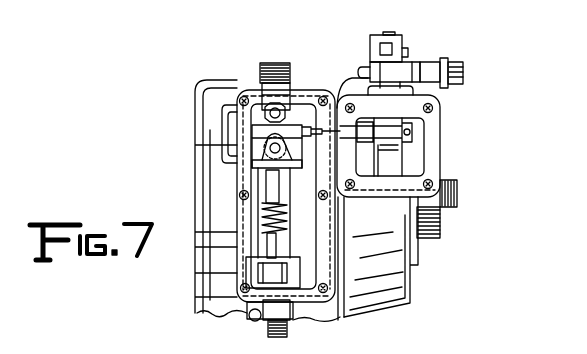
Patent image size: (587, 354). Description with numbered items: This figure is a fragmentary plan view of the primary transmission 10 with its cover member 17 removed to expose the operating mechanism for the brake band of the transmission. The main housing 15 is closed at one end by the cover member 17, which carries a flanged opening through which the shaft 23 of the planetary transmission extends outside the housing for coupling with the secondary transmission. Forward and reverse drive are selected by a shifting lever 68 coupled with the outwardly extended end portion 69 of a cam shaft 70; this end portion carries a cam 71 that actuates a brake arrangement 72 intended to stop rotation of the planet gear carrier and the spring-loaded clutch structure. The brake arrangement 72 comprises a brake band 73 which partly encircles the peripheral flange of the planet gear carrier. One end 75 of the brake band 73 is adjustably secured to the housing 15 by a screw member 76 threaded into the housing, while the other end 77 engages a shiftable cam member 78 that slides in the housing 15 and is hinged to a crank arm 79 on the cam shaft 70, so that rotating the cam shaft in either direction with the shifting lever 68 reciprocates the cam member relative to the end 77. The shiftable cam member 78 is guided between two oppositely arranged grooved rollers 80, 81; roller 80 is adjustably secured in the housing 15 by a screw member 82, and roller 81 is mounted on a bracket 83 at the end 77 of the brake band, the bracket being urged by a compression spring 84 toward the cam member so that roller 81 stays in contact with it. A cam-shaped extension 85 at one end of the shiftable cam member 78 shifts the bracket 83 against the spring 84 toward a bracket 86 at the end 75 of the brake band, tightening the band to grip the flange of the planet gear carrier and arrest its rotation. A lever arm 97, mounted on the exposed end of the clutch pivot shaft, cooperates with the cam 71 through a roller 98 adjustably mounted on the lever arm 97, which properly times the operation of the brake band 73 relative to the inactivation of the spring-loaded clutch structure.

The fuel injection pump housing 10 is at (192, 310).
The housing 15 is at (227, 313).
The cover member 17 is at (407, 283).
The shaft 23 is at (445, 204).
The shifting lever 68 is at (405, 45).
The outwardly extended end portion 69 is at (388, 33).
The cam shaft 70 is at (401, 87).
The cam 71 is at (380, 72).
The brake arrangement 72 is at (313, 156).
The brake band 73 is at (255, 145).
The end of brake band 75 is at (253, 280).
The screw member 76 is at (290, 328).
The other end of brake band 77 is at (252, 183).
The shiftable cam member 78 is at (252, 100).
The crank arm 79 is at (395, 141).
The grooved roller 80 is at (303, 110).
The grooved roller 81 is at (292, 189).
The screw member 82 is at (266, 82).
The bracket 83 is at (253, 170).
The compression spring 84 is at (288, 226).
The cam-shaped extension 85 is at (208, 128).
The bracket 86 is at (252, 260).
The lever arm 97 is at (464, 68).
The roller 98 is at (464, 84).